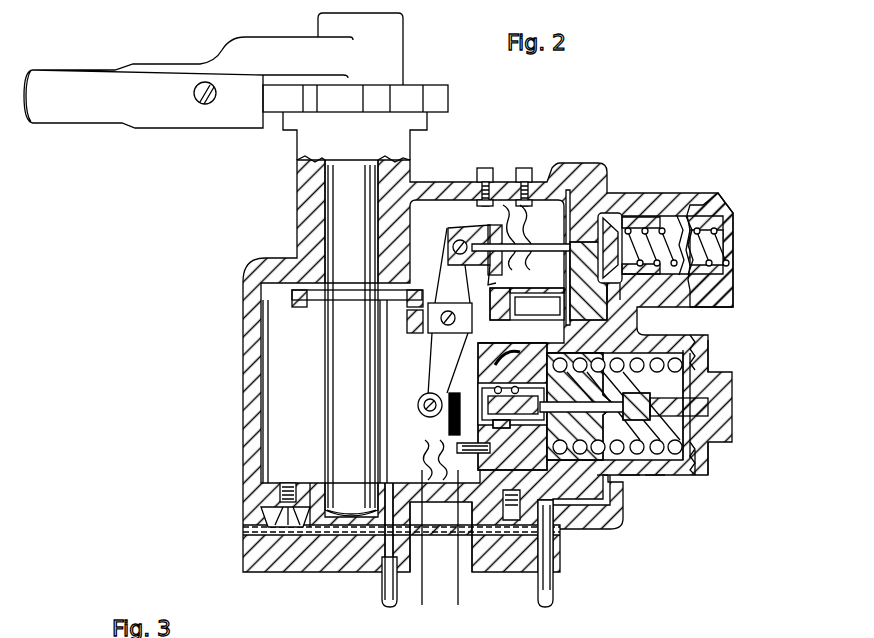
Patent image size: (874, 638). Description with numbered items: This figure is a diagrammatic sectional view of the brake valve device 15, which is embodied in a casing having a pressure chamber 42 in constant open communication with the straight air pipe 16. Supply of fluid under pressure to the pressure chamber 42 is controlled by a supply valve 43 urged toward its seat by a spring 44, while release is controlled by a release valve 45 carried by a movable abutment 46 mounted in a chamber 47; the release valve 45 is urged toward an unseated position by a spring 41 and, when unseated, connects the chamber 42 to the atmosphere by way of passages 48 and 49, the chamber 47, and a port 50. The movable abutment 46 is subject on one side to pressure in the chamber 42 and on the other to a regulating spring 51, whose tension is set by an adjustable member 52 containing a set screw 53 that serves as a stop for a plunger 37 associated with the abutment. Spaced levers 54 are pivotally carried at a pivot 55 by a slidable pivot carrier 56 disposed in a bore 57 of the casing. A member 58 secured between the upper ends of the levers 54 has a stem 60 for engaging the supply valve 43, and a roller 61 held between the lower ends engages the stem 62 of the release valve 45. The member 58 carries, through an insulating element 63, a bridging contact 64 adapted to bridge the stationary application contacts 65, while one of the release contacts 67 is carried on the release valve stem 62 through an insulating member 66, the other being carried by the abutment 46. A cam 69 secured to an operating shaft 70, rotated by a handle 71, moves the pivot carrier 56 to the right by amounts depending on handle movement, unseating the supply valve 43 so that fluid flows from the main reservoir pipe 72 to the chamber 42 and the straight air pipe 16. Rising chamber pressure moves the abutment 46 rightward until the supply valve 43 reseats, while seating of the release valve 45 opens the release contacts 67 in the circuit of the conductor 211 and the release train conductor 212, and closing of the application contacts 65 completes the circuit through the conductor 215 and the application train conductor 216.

The brake valve device 15 is at (286, 161).
The straight air pipe 16 is at (385, 593).
The plunger 37 is at (637, 407).
The spring 41 is at (480, 397).
The pressure chamber 42 is at (287, 380).
The supply valve 43 is at (612, 222).
The spring 44 is at (700, 218).
The release valve 45 is at (497, 380).
The movable abutment 46 is at (612, 480).
The chamber 47 is at (628, 478).
The passage 48 is at (493, 357).
The passage 49 is at (585, 390).
The port 50 is at (655, 478).
The regulating spring 51 is at (700, 465).
The adjustable member 52 is at (683, 360).
The set screw 53 is at (720, 398).
The spaced levers 54 is at (430, 372).
The pivot 55 is at (428, 336).
The slidable pivot carrier 56 is at (495, 317).
The bore 57 is at (577, 313).
The member 58 is at (450, 232).
The stem 60 is at (542, 260).
The roller 61 is at (420, 412).
The release valve stem 62 is at (486, 427).
The insulating element 63 is at (488, 228).
The bridging contact 64 is at (484, 277).
The application contacts 65 is at (521, 237).
The insulating member 66 is at (418, 401).
The release contacts 67 is at (456, 463).
The cam 69 is at (313, 323).
The operating shaft 70 is at (343, 412).
The handle 71 is at (100, 110).
The main reservoir pipe 72 is at (547, 592).
The conductor 211 is at (423, 593).
The release train conductor 212 is at (458, 602).
The conductor 215 is at (540, 168).
The application train conductor 216 is at (500, 168).